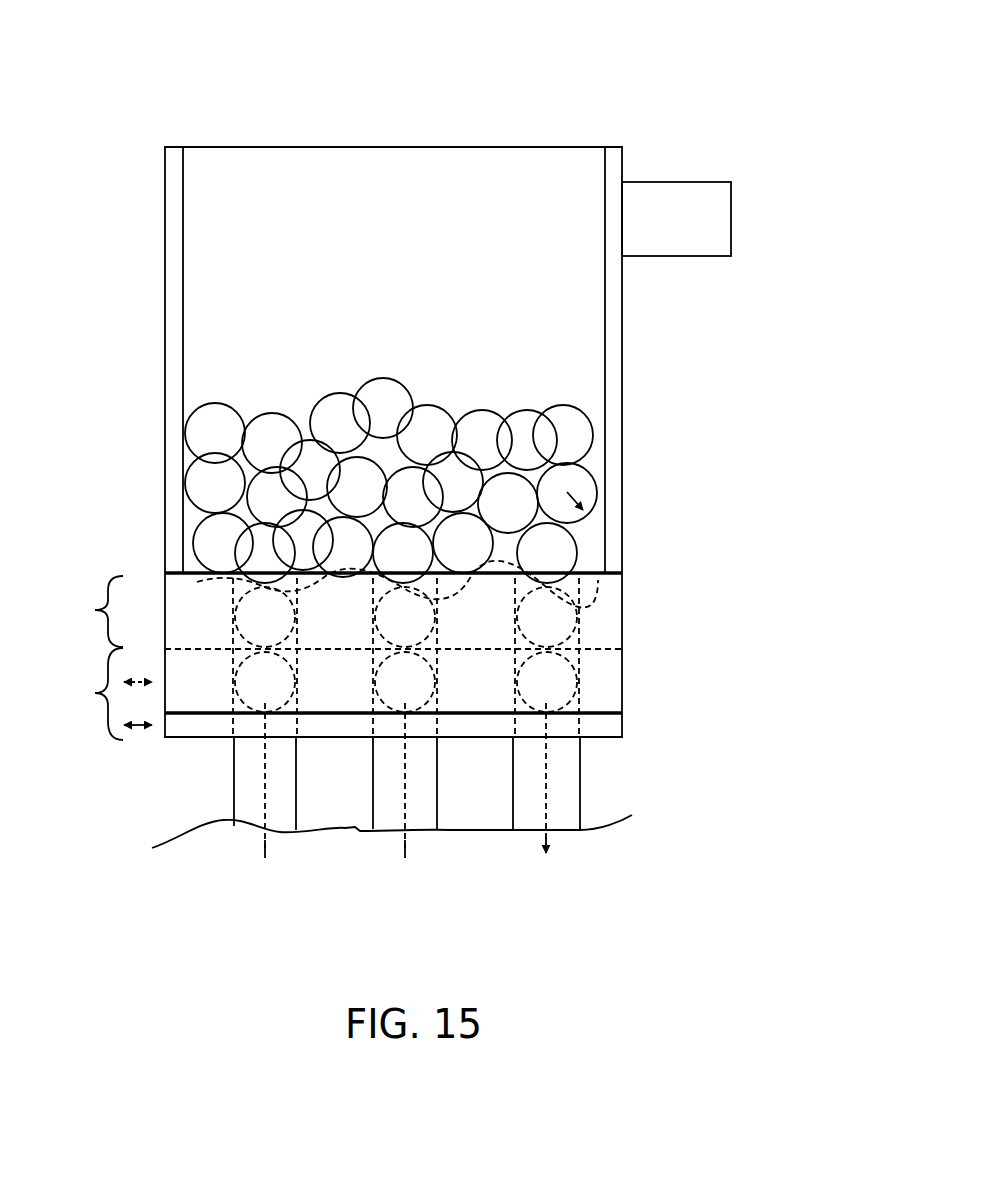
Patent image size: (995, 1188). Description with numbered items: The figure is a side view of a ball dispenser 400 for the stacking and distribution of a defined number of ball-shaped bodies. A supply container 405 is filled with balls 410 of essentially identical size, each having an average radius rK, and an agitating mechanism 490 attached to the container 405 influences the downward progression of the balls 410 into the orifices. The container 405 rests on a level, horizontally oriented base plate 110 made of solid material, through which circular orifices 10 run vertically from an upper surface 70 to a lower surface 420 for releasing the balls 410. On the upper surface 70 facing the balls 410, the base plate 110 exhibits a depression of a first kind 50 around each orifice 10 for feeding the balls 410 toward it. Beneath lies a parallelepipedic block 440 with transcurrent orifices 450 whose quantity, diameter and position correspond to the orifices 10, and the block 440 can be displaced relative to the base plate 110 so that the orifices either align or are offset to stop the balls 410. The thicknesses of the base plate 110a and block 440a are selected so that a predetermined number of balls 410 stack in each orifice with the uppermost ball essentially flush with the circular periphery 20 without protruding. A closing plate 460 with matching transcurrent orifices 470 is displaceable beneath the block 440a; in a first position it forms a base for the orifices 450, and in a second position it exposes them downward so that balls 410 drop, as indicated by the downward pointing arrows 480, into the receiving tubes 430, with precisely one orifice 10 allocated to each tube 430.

The ball dispenser 400 is at (146, 115).
The supply container 405 is at (165, 430).
The agitating mechanism 490 is at (702, 234).
The balls 410 is at (572, 425).
The upper surface 70 is at (588, 570).
The depression of a first kind 50 is at (222, 580).
The base plate 110 is at (622, 597).
The base plate 110a is at (71, 611).
The block 440a is at (86, 694).
The parallelepipedic block 440 is at (187, 738).
The closing plate 460 is at (342, 769).
The lower surface 420 is at (612, 715).
The circular orifices 10 is at (297, 598).
The circular periphery 20 is at (415, 588).
The transcurrent orifices 450 is at (298, 737).
The transcurrent orifices 470 is at (405, 806).
The receiving tubes 430 is at (578, 777).
The downward pointing arrows 480 is at (546, 808).
The average radius of a ball rK is at (567, 492).